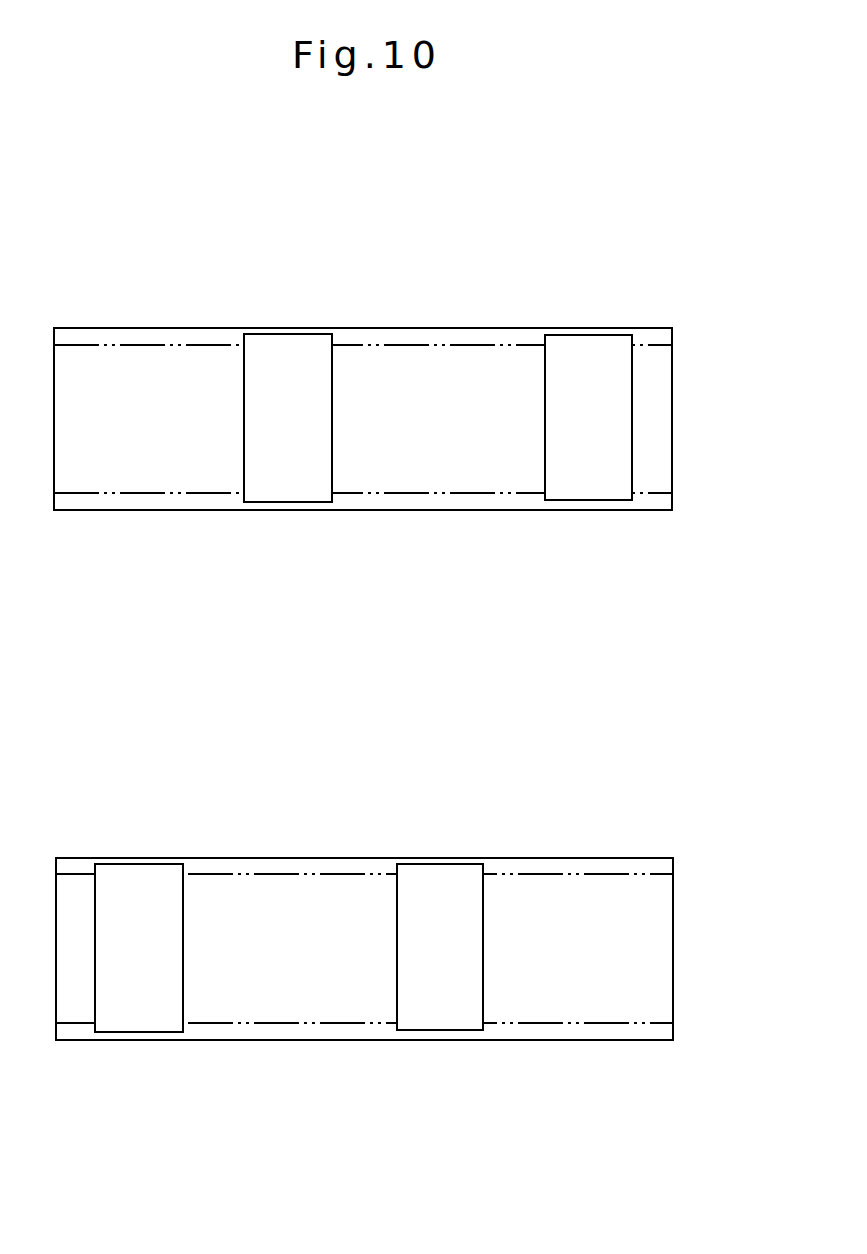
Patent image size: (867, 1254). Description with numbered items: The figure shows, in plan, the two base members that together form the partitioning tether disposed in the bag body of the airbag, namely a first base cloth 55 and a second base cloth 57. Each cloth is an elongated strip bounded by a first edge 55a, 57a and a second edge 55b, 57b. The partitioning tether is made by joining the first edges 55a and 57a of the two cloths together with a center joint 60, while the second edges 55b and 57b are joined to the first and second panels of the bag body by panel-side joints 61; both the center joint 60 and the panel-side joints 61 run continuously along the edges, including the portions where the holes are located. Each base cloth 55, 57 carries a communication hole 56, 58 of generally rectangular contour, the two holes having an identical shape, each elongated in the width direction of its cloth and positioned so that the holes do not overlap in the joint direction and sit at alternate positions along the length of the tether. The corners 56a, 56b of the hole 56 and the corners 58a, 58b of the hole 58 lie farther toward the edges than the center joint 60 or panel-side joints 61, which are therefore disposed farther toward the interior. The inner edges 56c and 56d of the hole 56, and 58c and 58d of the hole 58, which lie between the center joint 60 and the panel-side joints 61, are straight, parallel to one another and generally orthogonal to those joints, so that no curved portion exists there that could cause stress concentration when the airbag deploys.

The base cloth 55 is at (545, 285).
The first edge of base cloth 55a is at (443, 510).
The second edge of base cloth 55b is at (443, 328).
The communication hole 56 is at (602, 324).
The corner of communication hole 56a is at (244, 502).
The corner of communication hole 56b is at (244, 334).
The inner edge of communication hole 56c is at (545, 418).
The inner edge of communication hole 56d is at (632, 418).
The base cloth 57 is at (604, 823).
The first edge of base cloth 57a is at (360, 858).
The second edge of base cloth 57b is at (360, 1040).
The communication hole 58 is at (501, 966).
The corner of communication hole 58a is at (95, 864).
The corner of communication hole 58b is at (95, 1032).
The inner edge of communication hole 58c is at (397, 946).
The inner edge of communication hole 58d is at (483, 946).
The center joint 60 is at (150, 493).
The panel-side joints 61 is at (150, 345).